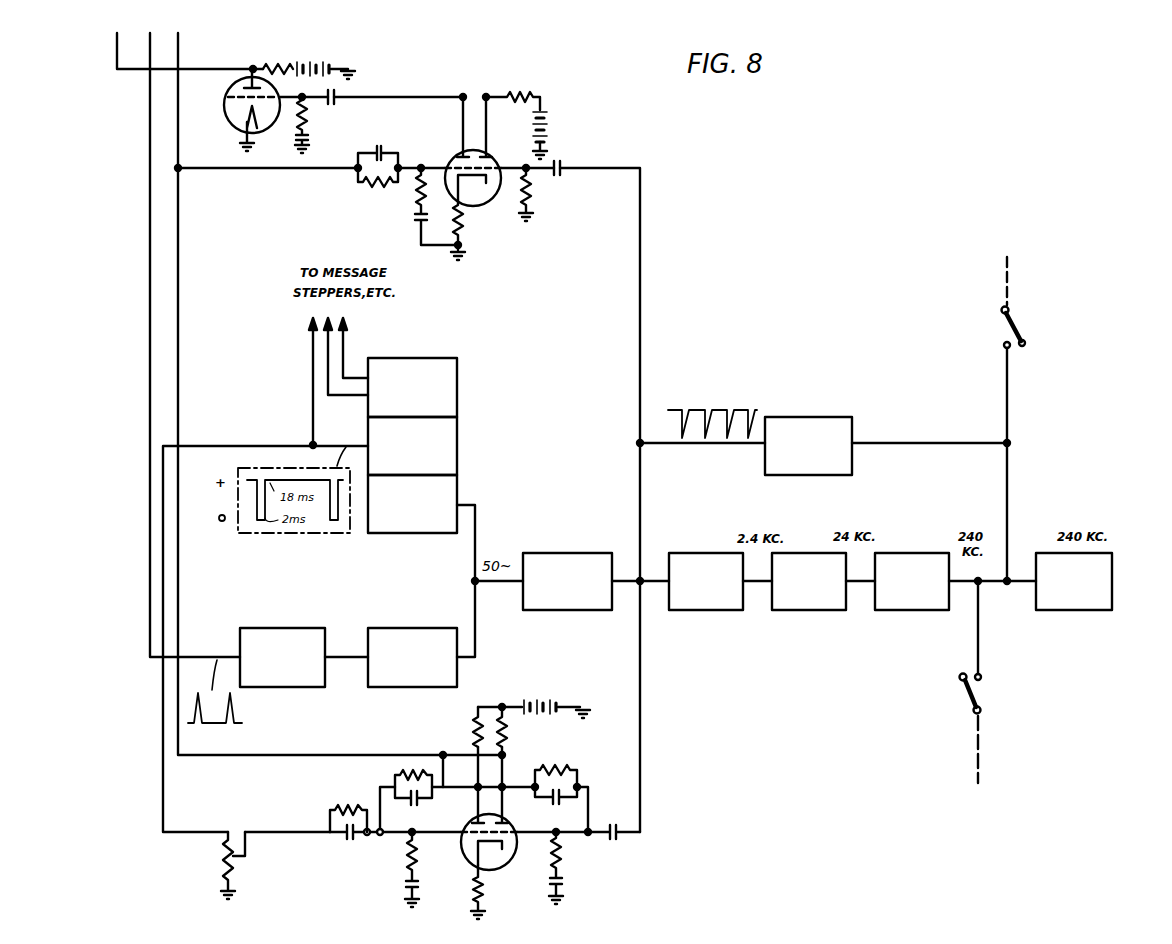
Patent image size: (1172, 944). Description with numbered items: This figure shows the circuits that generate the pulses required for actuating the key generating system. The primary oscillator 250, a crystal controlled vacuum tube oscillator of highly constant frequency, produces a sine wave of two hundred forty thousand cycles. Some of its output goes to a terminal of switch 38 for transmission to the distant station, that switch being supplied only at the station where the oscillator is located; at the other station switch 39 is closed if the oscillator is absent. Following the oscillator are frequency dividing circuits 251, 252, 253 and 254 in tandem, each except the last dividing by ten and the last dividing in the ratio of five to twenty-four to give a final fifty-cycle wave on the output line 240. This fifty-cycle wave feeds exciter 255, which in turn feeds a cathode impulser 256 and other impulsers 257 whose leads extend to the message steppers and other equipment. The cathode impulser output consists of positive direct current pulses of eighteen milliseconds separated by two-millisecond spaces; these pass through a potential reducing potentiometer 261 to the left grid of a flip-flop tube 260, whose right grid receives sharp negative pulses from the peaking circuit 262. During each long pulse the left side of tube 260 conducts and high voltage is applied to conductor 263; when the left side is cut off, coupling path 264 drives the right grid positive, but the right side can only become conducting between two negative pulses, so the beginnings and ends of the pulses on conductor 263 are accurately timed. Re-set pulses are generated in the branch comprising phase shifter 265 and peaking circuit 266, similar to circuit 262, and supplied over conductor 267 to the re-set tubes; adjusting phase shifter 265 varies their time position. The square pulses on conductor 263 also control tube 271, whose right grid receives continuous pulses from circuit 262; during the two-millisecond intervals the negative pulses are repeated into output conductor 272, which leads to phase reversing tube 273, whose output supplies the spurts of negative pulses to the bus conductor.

The switch 38 is at (1017, 321).
The switch 39 is at (970, 697).
The 50 cycle output line 240 is at (633, 554).
The primary oscillator 250 is at (1062, 610).
The frequency dividing circuit 251 is at (898, 610).
The frequency dividing circuit 252 is at (792, 610).
The frequency dividing circuit 253 is at (697, 610).
The frequency dividing circuit 254 is at (588, 610).
The exciter 255 is at (395, 533).
The cathode impulser 256 is at (458, 452).
The impulsers 257 is at (458, 402).
The flip-flop tube 260 is at (500, 868).
The potential reducing potentiometer 261 is at (218, 862).
The peaking circuit 262 is at (843, 472).
The conductor 263 is at (180, 210).
The coupling path 264 is at (562, 783).
The phase shifter 265 is at (397, 628).
The peaking circuit 266 is at (273, 628).
The conductor 267 is at (149, 120).
The tube 271 is at (483, 203).
The output conductor 272 is at (387, 97).
The phase reversing tube 273 is at (229, 129).